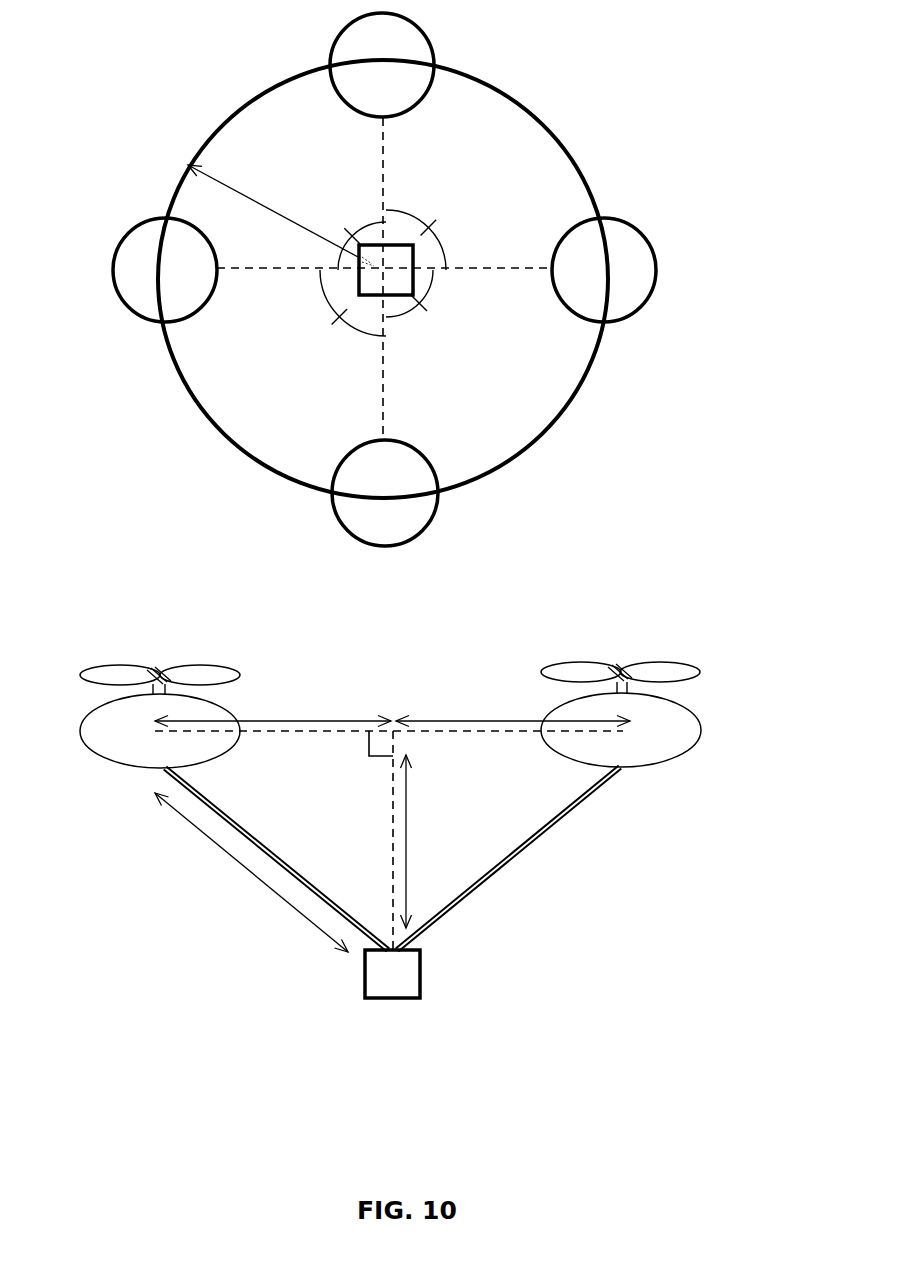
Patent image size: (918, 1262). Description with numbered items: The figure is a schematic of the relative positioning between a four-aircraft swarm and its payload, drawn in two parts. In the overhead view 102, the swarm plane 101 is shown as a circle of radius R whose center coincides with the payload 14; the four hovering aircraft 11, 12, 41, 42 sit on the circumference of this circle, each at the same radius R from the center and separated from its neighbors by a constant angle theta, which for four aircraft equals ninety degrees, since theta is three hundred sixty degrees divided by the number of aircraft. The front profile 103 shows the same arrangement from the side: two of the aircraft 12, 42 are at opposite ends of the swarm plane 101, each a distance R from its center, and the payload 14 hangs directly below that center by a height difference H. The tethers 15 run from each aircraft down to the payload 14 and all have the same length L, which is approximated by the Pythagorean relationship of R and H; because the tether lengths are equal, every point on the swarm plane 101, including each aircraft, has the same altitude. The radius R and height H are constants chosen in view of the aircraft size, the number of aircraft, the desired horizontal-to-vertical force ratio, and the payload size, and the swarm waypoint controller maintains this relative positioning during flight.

The aircraft H1 11 is at (339, 35).
The aircraft H2 12 is at (649, 244).
The aircraft H3 41 is at (352, 452).
The aircraft H4 42 is at (116, 258).
The payload 14 is at (360, 295).
The tethers 15 is at (302, 877).
The swarm plane 101 is at (252, 467).
The overhead view 102 is at (783, 277).
The front profile 103 is at (801, 839).